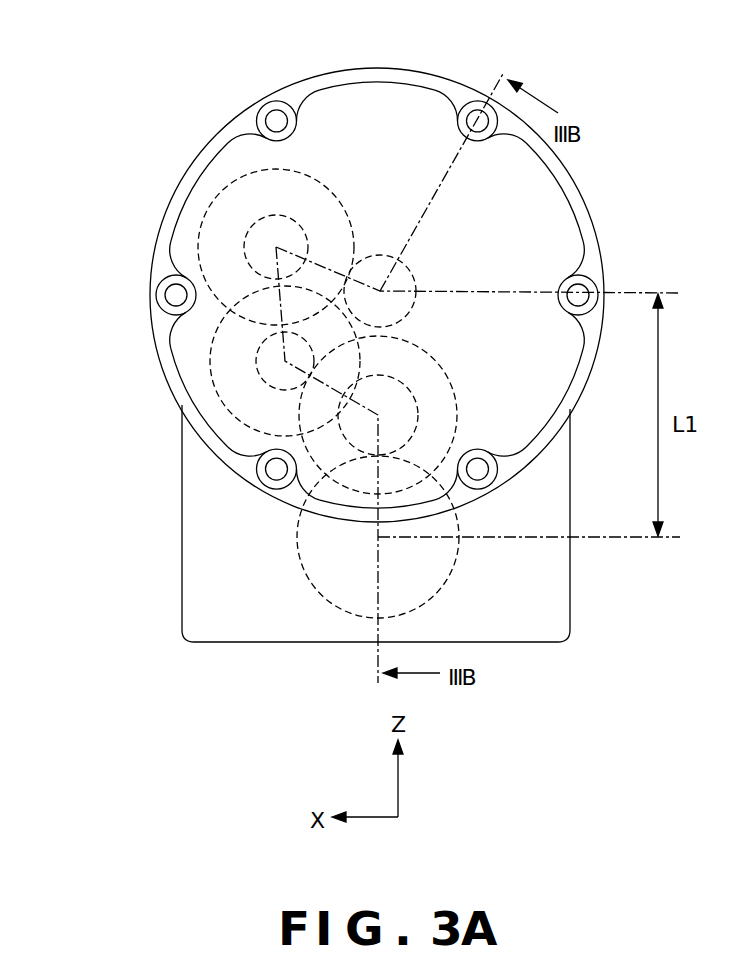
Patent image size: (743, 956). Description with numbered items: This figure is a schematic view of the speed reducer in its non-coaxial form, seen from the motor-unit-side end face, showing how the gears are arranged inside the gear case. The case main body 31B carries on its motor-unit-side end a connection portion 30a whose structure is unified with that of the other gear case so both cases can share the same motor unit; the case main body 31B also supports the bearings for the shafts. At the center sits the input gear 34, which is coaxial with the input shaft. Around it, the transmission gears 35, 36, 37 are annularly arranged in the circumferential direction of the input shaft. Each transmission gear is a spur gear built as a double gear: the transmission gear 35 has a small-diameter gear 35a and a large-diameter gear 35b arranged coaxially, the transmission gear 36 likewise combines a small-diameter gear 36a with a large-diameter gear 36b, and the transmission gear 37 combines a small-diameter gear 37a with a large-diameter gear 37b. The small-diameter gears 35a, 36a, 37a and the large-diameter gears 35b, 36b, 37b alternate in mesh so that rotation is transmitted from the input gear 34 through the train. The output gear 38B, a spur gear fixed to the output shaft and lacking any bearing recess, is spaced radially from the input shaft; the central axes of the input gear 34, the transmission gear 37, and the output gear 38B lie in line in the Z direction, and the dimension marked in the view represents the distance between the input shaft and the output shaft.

The connection portion 30a is at (589, 223).
The case main body 31B is at (590, 190).
The input gear 34 is at (412, 270).
The transmission gear 35 is at (273, 215).
The small-diameter gear 35a is at (340, 213).
The large-diameter gear 35b is at (305, 235).
The transmission gear 36 is at (230, 370).
The small-diameter gear 36a is at (211, 378).
The large-diameter gear 36b is at (258, 358).
The transmission gear 37 is at (419, 409).
The small-diameter gear 37a is at (452, 388).
The large-diameter gear 37b is at (420, 420).
The output gear 38B is at (450, 583).